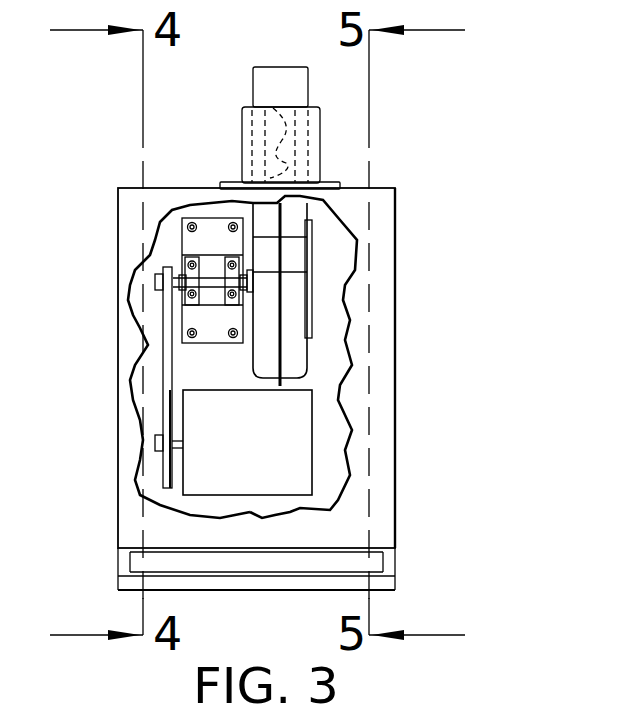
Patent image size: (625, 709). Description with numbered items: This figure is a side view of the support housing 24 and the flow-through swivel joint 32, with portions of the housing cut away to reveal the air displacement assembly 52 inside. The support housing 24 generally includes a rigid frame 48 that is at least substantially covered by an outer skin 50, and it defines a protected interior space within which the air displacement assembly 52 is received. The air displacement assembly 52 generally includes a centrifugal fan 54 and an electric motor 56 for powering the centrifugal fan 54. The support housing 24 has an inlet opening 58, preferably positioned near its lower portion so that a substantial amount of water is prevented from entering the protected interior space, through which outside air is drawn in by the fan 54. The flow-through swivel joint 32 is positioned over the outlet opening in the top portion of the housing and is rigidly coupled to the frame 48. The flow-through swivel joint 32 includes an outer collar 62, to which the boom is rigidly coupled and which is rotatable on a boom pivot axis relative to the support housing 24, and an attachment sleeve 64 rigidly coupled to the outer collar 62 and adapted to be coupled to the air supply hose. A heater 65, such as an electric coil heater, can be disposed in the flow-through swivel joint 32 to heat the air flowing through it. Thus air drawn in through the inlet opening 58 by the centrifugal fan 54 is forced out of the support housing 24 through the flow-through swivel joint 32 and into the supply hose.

The support housing 24 is at (398, 274).
The flow-through swivel joint 32 is at (241, 160).
The rigid frame 48 is at (133, 378).
The outer skin 50 is at (133, 520).
The air displacement assembly 52 is at (320, 370).
The centrifugal fan 54 is at (297, 288).
The electric motor 56 is at (237, 392).
The inlet opening 58 is at (225, 565).
The outer collar 62 is at (242, 108).
The attachment sleeve 64 is at (253, 80).
The heater 65 is at (265, 135).